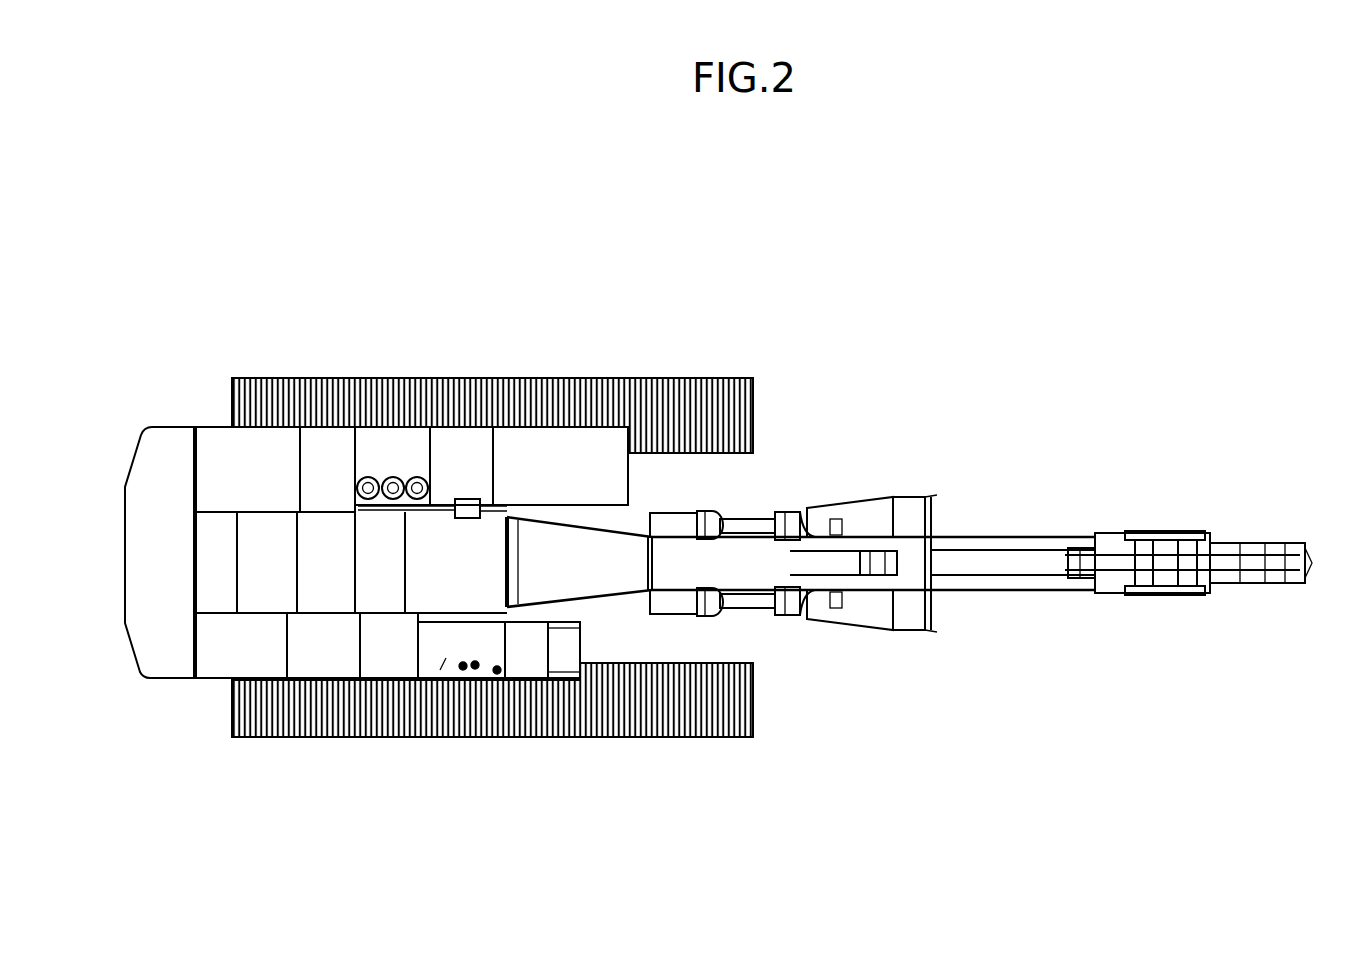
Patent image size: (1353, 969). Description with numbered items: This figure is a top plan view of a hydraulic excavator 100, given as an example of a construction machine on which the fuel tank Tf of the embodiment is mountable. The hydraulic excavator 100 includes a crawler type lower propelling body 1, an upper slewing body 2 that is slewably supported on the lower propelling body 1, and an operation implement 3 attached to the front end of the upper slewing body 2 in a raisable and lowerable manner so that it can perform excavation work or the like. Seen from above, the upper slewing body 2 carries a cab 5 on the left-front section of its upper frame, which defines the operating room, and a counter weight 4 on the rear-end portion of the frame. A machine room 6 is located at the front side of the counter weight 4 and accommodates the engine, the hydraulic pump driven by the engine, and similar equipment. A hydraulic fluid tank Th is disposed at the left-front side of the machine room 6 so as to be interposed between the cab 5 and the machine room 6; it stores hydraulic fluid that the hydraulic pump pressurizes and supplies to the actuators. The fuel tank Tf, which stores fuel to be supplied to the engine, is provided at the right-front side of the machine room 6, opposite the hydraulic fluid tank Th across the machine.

The hydraulic excavator 100 is at (201, 300).
The lower propelling body 1 is at (227, 722).
The upper slewing body 2 is at (170, 684).
The operation implement 3 is at (991, 533).
The counter weight 4 is at (136, 485).
The cab 5 is at (583, 450).
The machine room 6 is at (213, 425).
The hydraulic fluid tank Th is at (413, 448).
The fuel tank Tf is at (445, 660).